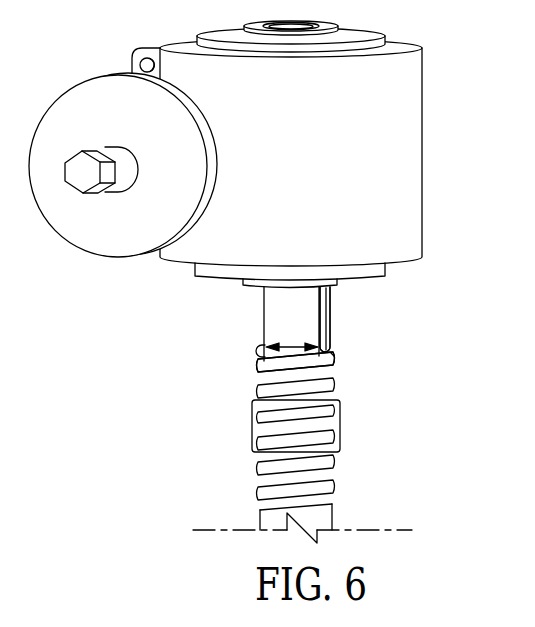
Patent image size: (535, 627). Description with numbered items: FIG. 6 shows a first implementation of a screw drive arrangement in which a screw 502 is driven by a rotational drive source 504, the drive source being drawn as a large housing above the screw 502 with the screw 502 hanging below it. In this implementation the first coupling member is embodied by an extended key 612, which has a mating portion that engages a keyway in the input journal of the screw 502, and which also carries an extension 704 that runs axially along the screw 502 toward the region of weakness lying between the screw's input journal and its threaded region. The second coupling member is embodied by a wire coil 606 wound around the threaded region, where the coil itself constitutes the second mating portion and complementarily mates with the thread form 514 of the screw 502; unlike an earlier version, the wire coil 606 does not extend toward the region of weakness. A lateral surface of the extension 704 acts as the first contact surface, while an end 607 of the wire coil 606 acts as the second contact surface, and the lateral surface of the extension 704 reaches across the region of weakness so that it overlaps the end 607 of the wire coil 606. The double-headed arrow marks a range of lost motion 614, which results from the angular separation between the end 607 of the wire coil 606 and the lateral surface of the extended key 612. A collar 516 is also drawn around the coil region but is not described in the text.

The rotational drive source 504 is at (413, 152).
The screw 502 is at (264, 306).
The extended key 612 is at (330, 294).
The extension 704 is at (332, 334).
The range of lost motion 614 is at (295, 345).
The end of the wire coil 607 is at (258, 349).
The wire coil 606 is at (260, 381).
The thread form 514 is at (333, 381).
The collar 516 is at (255, 429).